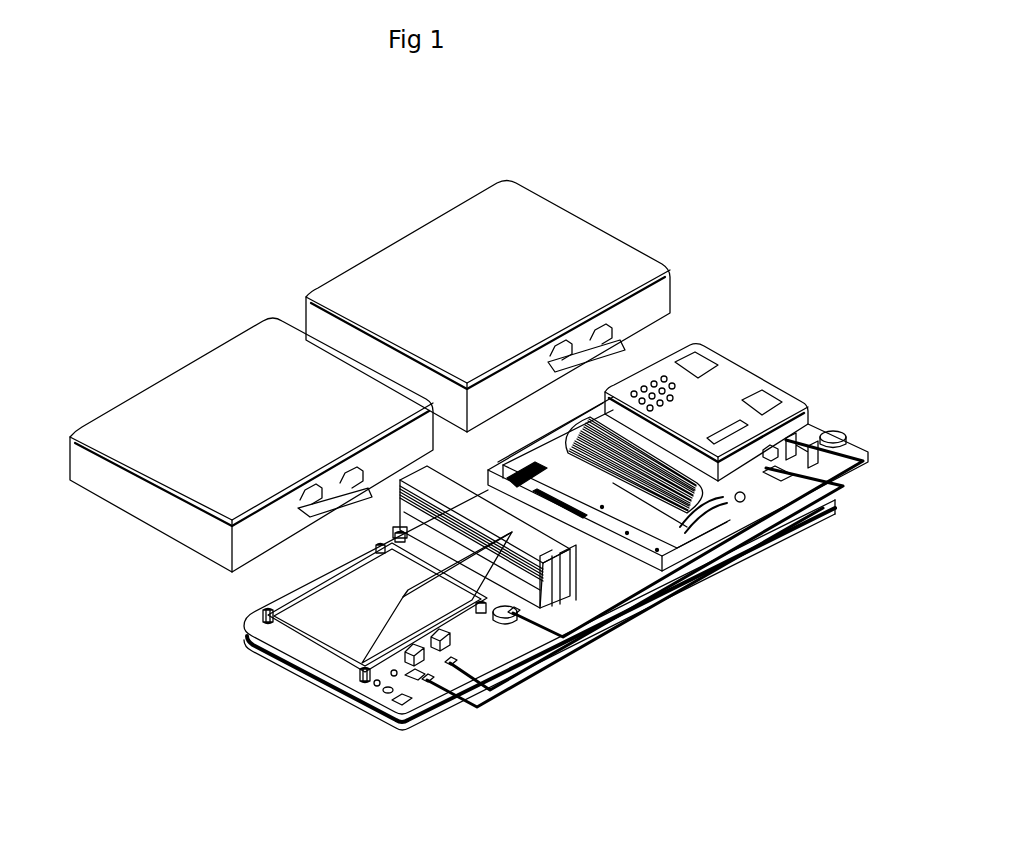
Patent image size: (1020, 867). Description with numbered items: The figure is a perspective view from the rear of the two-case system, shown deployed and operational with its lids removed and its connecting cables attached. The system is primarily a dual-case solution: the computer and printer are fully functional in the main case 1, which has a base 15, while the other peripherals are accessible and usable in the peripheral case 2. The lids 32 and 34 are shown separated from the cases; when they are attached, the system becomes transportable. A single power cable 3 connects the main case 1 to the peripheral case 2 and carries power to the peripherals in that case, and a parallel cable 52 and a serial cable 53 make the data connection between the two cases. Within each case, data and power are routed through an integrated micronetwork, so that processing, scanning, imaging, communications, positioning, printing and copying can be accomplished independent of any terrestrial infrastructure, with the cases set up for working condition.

The main case 1 is at (397, 710).
The peripheral case 2 is at (820, 420).
The power cable 3 is at (866, 458).
The base 15 is at (753, 480).
The lid 32 is at (173, 370).
The lid 34 is at (410, 236).
The parallel cable 52 is at (846, 488).
The serial cable 53 is at (463, 703).